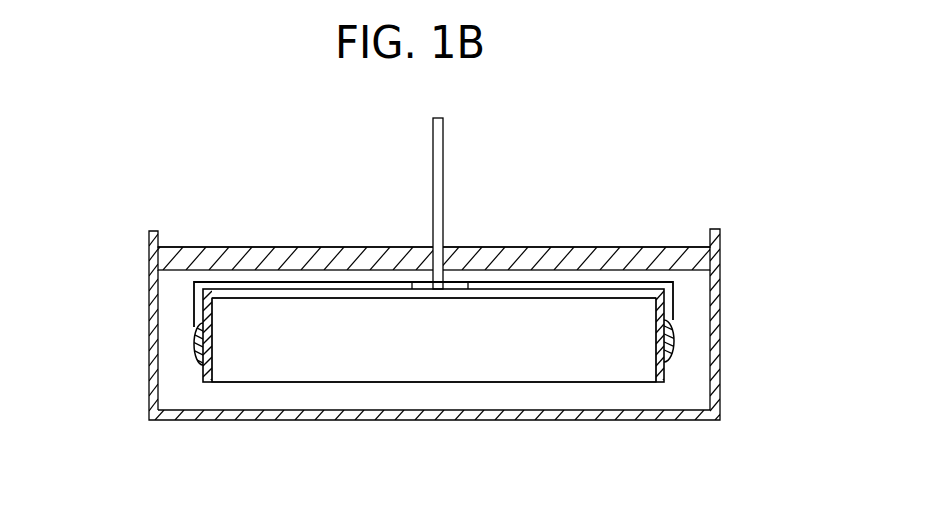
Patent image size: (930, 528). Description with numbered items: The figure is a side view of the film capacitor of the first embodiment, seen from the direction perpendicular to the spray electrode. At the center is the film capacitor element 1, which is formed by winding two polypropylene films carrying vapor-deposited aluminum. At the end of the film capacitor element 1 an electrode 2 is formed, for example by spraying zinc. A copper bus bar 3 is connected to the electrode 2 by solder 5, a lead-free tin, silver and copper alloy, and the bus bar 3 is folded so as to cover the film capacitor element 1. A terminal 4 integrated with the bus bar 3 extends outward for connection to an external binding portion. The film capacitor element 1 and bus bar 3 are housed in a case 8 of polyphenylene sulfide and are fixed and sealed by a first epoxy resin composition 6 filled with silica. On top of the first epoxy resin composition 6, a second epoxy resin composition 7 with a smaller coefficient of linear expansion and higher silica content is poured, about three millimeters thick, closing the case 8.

The film capacitor element 1 is at (378, 355).
The electrode 2 is at (208, 375).
The bus bar 3 is at (672, 285).
The terminal 4 is at (443, 143).
The solder 5 is at (683, 353).
The first epoxy resin composition 6 is at (465, 393).
The second epoxy resin composition 7 is at (632, 255).
The case 8 is at (393, 324).